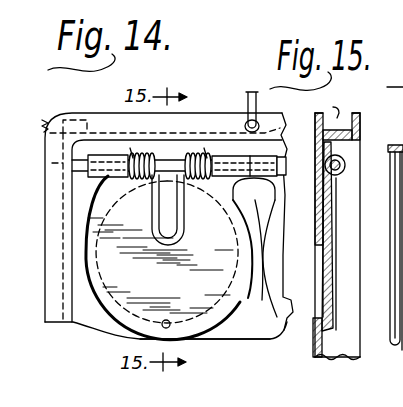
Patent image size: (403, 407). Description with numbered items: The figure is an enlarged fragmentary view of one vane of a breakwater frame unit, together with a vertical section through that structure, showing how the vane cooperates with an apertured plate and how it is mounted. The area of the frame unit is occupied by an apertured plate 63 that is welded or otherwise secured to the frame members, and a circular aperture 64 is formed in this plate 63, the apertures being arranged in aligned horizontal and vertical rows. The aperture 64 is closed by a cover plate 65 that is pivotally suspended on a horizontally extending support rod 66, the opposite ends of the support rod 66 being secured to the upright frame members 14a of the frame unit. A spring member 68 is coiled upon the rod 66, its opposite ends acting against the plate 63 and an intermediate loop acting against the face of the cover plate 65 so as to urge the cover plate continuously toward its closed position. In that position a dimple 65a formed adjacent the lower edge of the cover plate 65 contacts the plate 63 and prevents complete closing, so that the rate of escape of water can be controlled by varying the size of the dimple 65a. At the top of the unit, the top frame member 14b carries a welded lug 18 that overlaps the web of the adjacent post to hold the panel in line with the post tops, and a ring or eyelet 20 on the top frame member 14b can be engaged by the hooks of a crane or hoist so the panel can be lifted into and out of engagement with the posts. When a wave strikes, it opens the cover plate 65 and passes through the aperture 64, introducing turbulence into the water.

In FIG. 14, the upright frame member 14a is at (52, 311).
In FIG. 15, the upright frame member 14a is at (350, 243).
In FIG. 14, the top frame member 14b is at (92, 122).
In FIG. 15, the top frame member 14b is at (354, 113).
In FIG. 14, the lug 18 is at (47, 120).
In FIG. 15, the lug 18 is at (341, 117).
In FIG. 14, the ring or eyelet 20 is at (249, 92).
In FIG. 14, the apertured plate 63 is at (229, 150).
In FIG. 14, the circular aperture 64 is at (282, 318).
In FIG. 14, the cover plate 65 is at (113, 308).
In FIG. 15, the cover plate 65 is at (333, 298).
In FIG. 14, the dimple 65a is at (198, 337).
In FIG. 15, the dimple 65a is at (328, 331).
In FIG. 14, the support rod 66 is at (167, 160).
In FIG. 15, the support rod 66 is at (345, 165).
In FIG. 14, the spring member 68 is at (187, 222).
In FIG. 15, the spring member 68 is at (334, 212).